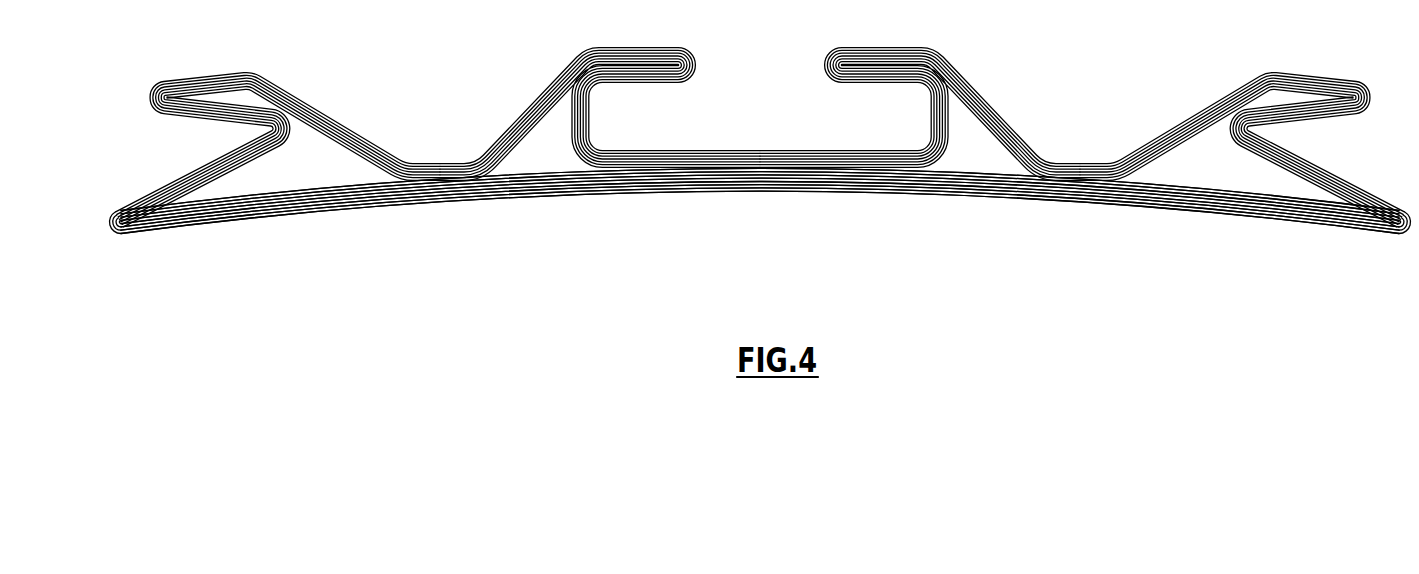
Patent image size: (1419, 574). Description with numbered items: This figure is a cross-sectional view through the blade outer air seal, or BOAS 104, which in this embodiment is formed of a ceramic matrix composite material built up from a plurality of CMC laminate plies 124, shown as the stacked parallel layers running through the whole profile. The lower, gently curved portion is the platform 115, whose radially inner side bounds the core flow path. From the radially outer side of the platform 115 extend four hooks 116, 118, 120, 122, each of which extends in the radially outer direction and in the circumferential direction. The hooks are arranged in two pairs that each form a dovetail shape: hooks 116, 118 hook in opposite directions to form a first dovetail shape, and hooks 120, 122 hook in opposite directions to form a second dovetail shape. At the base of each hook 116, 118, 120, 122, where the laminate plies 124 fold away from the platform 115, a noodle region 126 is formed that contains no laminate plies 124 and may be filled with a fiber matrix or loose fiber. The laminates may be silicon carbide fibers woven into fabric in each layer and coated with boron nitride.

The BOAS 104 is at (233, 218).
The platform 115 is at (720, 177).
The hook 116 is at (183, 88).
The hook 118 is at (630, 47).
The hook 120 is at (881, 51).
The hook 122 is at (1313, 82).
The CMC laminate plies 124 is at (434, 190).
The noodle region 126 is at (271, 181).